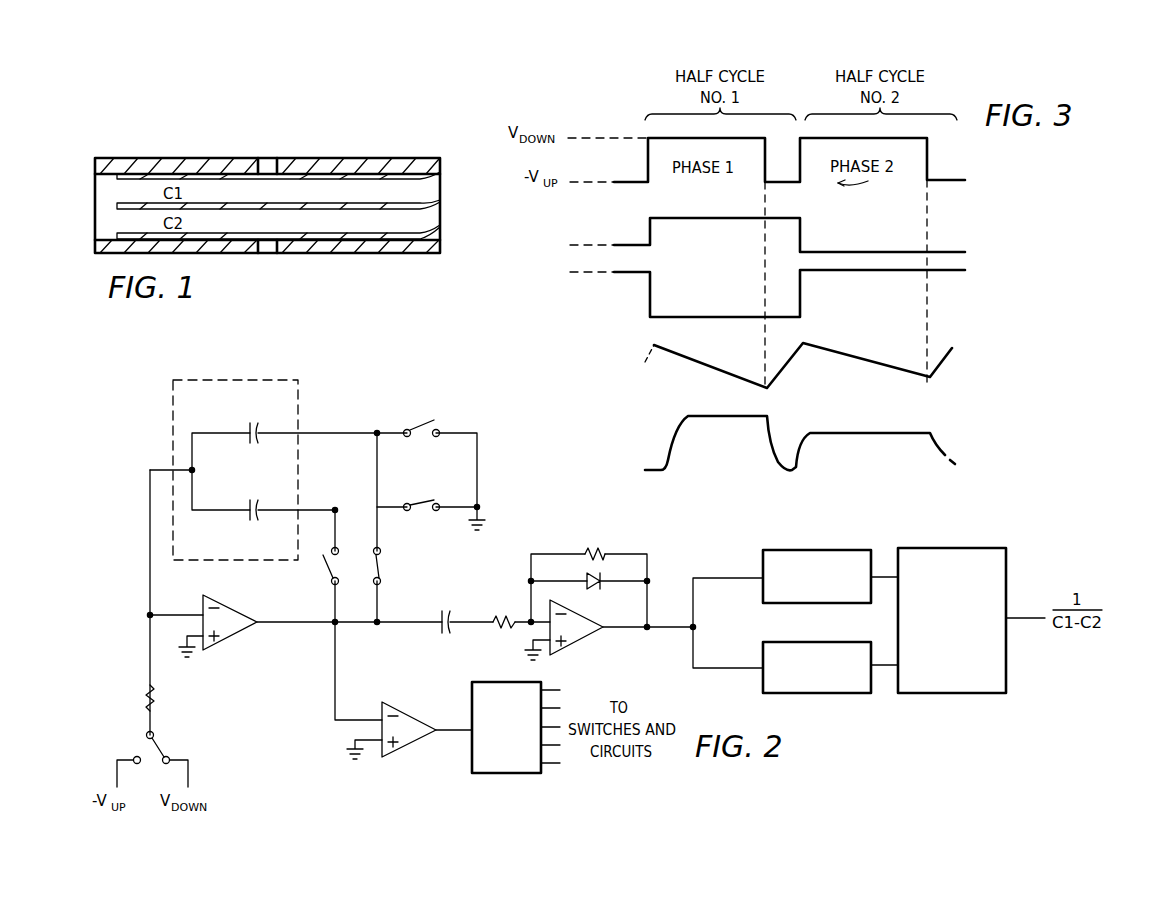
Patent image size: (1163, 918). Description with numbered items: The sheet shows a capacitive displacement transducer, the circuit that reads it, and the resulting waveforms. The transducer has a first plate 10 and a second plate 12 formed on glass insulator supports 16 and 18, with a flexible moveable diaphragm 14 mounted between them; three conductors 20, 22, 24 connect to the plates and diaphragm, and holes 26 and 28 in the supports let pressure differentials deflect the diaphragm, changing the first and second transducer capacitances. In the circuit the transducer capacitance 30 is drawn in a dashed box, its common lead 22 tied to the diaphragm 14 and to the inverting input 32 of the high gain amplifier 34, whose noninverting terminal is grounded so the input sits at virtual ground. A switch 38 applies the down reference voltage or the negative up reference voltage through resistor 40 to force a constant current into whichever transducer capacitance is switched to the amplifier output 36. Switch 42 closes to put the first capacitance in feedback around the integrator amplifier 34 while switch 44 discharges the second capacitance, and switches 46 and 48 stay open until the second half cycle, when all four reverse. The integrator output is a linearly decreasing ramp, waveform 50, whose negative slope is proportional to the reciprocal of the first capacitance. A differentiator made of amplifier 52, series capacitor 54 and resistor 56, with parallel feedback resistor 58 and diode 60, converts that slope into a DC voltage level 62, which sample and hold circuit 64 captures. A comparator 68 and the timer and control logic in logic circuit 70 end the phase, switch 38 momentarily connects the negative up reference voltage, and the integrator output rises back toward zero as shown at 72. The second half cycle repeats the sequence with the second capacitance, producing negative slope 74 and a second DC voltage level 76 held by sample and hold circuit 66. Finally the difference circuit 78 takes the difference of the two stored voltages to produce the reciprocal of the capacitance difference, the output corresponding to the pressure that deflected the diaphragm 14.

In FIG. 1, the first plate 10 is at (332, 178).
In FIG. 2, the first plate 10 is at (260, 426).
In FIG. 1, the second plate 12 is at (333, 236).
In FIG. 2, the second plate 12 is at (260, 502).
In FIG. 1, the moveable diaphragm 14 is at (117, 206).
In FIG. 2, the moveable diaphragm 14 is at (228, 436).
In FIG. 1, the glass insulator support 16 is at (383, 158).
In FIG. 1, the glass insulator support 18 is at (394, 253).
In FIG. 1, the conductor 20 is at (440, 172).
In FIG. 2, the conductor 20 is at (305, 430).
In FIG. 1, the common lead 22 is at (440, 201).
In FIG. 2, the common lead 22 is at (170, 468).
In FIG. 1, the conductor 24 is at (440, 226).
In FIG. 2, the conductor 24 is at (342, 505).
In FIG. 1, the hole 26 is at (263, 158).
In FIG. 1, the hole 28 is at (265, 253).
In FIG. 2, the transducer capacitance 30 is at (242, 370).
In FIG. 2, the inverting input 32 is at (176, 612).
In FIG. 2, the high gain amplifier 34 is at (243, 640).
In FIG. 3, the high gain amplifier 34 is at (892, 364).
In FIG. 2, the amplifier output 36 is at (376, 626).
In FIG. 2, the switch 38 is at (158, 748).
In FIG. 3, the switch 38 is at (833, 160).
In FIG. 2, the resistor 40 is at (157, 697).
In FIG. 2, the switch 42 is at (383, 582).
In FIG. 3, the switch 42 is at (879, 235).
In FIG. 2, the switch 44 is at (426, 500).
In FIG. 3, the switch 44 is at (879, 235).
In FIG. 2, the switch 46 is at (328, 584).
In FIG. 3, the switch 46 is at (879, 293).
In FIG. 2, the switch 48 is at (422, 416).
In FIG. 3, the switch 48 is at (879, 293).
In FIG. 3, the waveform 50 is at (724, 370).
In FIG. 2, the amplifier 52 is at (597, 636).
In FIG. 3, the amplifier 52 is at (901, 443).
In FIG. 2, the series capacitor 54 is at (447, 636).
In FIG. 2, the resistor 56 is at (502, 614).
In FIG. 2, the parallel feedback resistor 58 is at (593, 550).
In FIG. 2, the diode 60 is at (598, 588).
In FIG. 3, the voltage level 62 is at (690, 417).
In FIG. 2, the sample and hold circuit 64 is at (763, 560).
In FIG. 2, the sample and hold circuit 66 is at (763, 688).
In FIG. 2, the comparator 68 is at (408, 712).
In FIG. 2, the logic circuit 70 is at (468, 770).
In FIG. 3, the linearly increasing output 72 is at (785, 366).
In FIG. 3, the negative slope 74 is at (878, 364).
In FIG. 3, the DC voltage level 76 is at (875, 432).
In FIG. 2, the difference circuit 78 is at (964, 594).